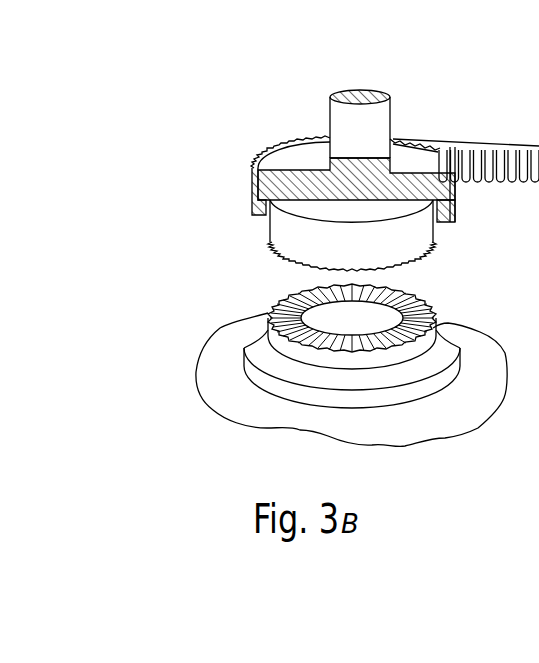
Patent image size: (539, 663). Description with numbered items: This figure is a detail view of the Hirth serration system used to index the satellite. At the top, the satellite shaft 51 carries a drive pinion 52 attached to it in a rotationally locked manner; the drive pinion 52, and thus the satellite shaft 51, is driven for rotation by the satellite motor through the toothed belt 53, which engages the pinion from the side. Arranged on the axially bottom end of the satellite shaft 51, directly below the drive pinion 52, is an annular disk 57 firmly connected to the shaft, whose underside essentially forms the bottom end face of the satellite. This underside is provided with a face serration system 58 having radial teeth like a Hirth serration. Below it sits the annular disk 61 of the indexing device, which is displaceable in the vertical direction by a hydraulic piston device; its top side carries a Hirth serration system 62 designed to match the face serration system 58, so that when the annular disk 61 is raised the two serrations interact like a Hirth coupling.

The satellite shaft 51 is at (337, 121).
The drive pinion 52 is at (250, 183).
The toothed belt 53 is at (473, 138).
The annular disk 57 is at (280, 223).
The face serration system 58 is at (307, 267).
The annular disk 61 is at (273, 338).
The Hirth serration system 62 is at (270, 304).